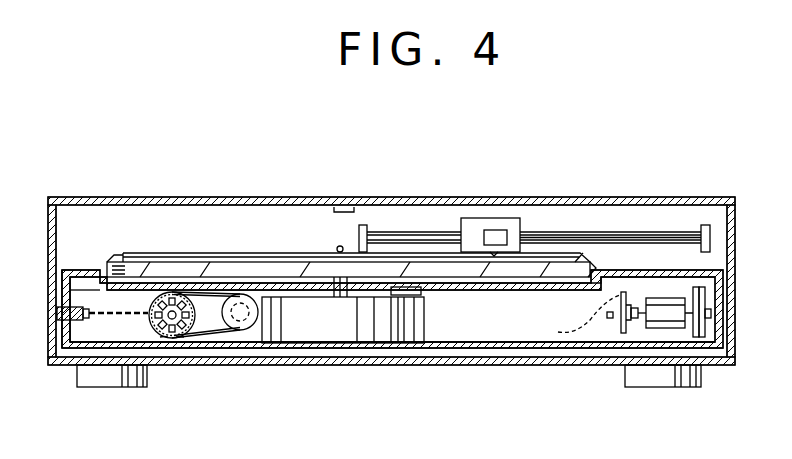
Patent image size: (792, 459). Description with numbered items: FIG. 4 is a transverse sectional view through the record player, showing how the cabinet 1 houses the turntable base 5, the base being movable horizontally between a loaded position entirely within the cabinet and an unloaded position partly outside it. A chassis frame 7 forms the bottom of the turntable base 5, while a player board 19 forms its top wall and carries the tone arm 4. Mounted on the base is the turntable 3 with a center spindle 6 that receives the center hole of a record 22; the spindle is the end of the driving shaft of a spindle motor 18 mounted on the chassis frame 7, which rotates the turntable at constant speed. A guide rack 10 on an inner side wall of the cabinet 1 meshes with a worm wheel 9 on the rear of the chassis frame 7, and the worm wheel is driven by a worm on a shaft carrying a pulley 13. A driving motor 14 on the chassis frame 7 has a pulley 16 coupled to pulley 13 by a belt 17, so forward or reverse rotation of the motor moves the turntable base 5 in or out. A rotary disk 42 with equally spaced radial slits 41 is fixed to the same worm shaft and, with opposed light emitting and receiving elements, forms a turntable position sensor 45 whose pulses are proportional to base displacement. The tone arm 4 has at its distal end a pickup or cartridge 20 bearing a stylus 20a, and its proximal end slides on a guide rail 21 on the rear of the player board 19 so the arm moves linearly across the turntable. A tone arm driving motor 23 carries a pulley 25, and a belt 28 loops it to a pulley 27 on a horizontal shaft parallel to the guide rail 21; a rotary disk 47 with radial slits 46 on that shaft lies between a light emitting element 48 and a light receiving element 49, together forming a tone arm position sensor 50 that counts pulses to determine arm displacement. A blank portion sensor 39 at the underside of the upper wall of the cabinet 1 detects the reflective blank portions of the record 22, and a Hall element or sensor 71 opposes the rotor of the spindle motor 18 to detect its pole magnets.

The cabinet 1 is at (118, 197).
The turntable 3 is at (107, 273).
The tone arm 4 is at (471, 218).
The turntable base 5 is at (641, 262).
The center spindle 6 is at (337, 247).
The chassis frame 7 is at (474, 346).
The worm wheel 9 is at (100, 318).
The guide rack 10 is at (55, 320).
The pulley 13 is at (187, 336).
The driving motor 14 is at (262, 333).
The pulley 16 is at (252, 333).
The belt 17 is at (232, 340).
The spindle motor 18 is at (372, 332).
The player board 19 is at (84, 272).
The pickup or cartridge 20 is at (499, 218).
The stylus 20a is at (510, 245).
The guide rail 21 is at (581, 237).
The record 22 is at (173, 255).
The tone arm driving motor 23 is at (668, 318).
The pulley 25 is at (710, 325).
The pulley 27 is at (710, 292).
The belt 28 is at (705, 288).
The blank portion sensor 39 is at (360, 207).
The radial slits 41 is at (184, 340).
The rotary disk 42 is at (160, 340).
The turntable position sensor 45 is at (117, 300).
The radial slits 46 is at (575, 320).
The rotary disk 47 is at (621, 293).
The light emitting element 48 is at (637, 319).
The light receiving element 49 is at (610, 319).
The tone arm position sensor 50 is at (548, 313).
The Hall element or sensor 71 is at (421, 295).